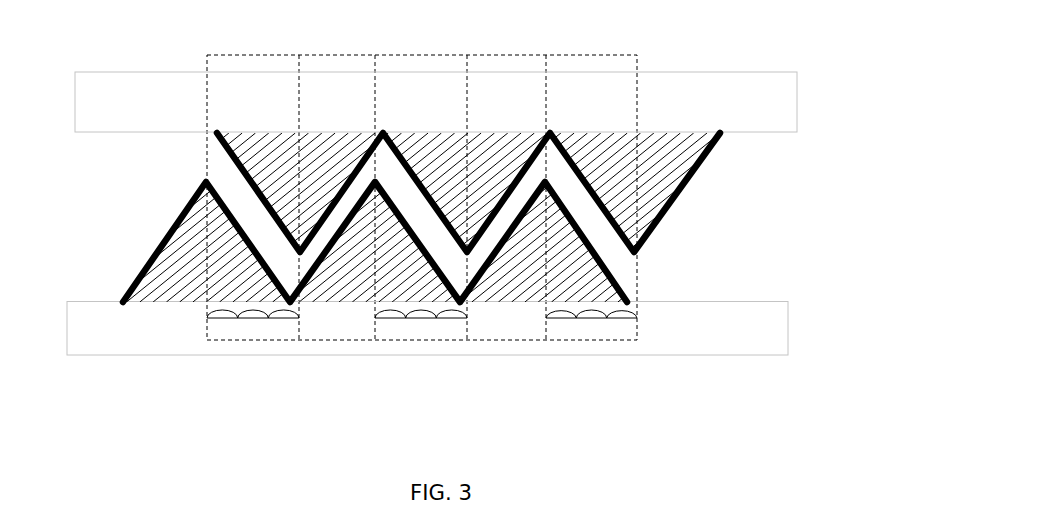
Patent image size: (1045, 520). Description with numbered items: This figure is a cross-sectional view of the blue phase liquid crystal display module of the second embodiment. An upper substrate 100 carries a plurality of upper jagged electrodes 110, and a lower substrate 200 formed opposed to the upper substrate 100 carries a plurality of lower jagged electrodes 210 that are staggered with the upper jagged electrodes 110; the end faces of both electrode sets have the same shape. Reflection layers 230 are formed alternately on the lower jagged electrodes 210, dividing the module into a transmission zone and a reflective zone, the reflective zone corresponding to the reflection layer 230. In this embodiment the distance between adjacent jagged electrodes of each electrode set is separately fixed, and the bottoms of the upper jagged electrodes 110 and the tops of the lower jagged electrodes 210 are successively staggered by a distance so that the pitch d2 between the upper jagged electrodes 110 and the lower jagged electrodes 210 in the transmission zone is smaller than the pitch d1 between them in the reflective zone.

The upper substrate 100 is at (673, 58).
The upper jagged electrodes 110 is at (693, 180).
The lower substrate 200 is at (643, 368).
The lower jagged electrodes 210 is at (155, 252).
The reflection layer 230 is at (423, 310).
The pitch in the reflective zone d1 is at (436, 210).
The pitch in the transmission zone d2 is at (514, 198).